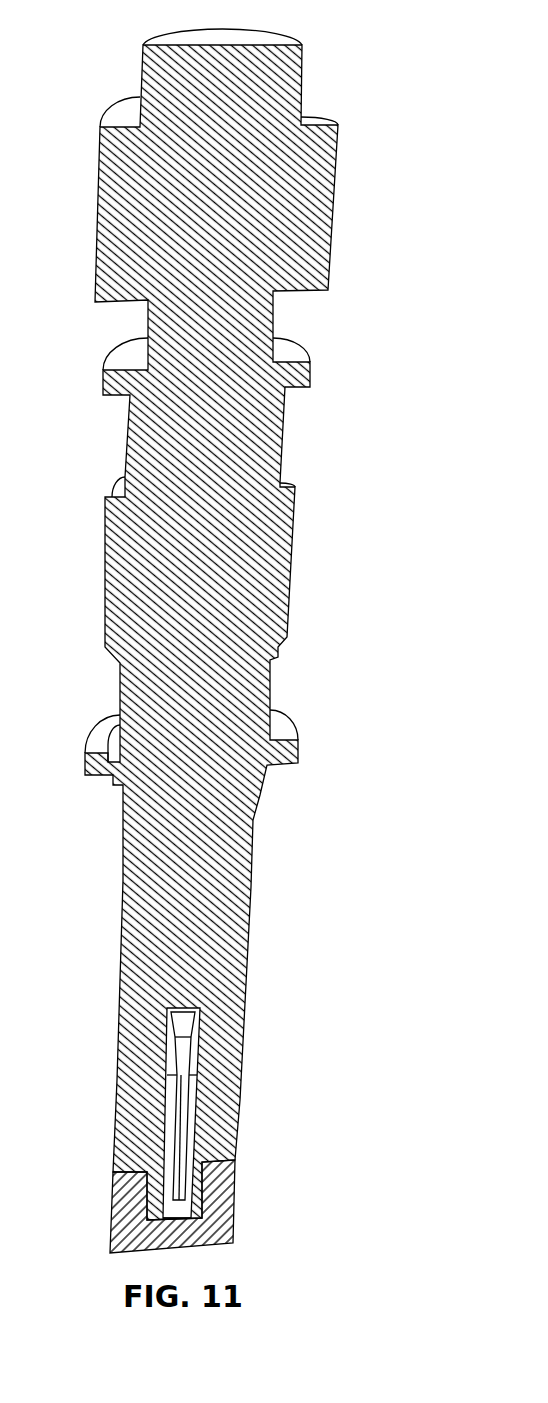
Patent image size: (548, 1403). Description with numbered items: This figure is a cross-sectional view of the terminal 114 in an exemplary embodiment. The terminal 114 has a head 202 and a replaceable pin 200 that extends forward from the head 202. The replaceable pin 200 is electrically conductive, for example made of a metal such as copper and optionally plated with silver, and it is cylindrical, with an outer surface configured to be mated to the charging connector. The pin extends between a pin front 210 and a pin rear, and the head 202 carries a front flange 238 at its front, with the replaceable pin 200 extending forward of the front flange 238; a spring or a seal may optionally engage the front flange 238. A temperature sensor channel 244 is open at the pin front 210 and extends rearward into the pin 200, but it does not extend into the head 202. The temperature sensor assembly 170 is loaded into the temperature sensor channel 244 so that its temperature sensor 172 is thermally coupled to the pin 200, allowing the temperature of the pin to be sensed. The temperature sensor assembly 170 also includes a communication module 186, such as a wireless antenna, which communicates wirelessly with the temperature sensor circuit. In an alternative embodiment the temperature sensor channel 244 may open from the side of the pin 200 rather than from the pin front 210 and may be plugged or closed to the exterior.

The terminal 114 is at (332, 67).
The head 202 is at (272, 465).
The front flange 238 is at (290, 753).
The temperature sensor assembly 170 is at (167, 1140).
The replaceable pin 200 is at (228, 1087).
The temperature sensor 172 is at (183, 1008).
The communication module 186 is at (182, 1115).
The pin front 210 is at (213, 1242).
The temperature sensor channel 244 is at (168, 1213).